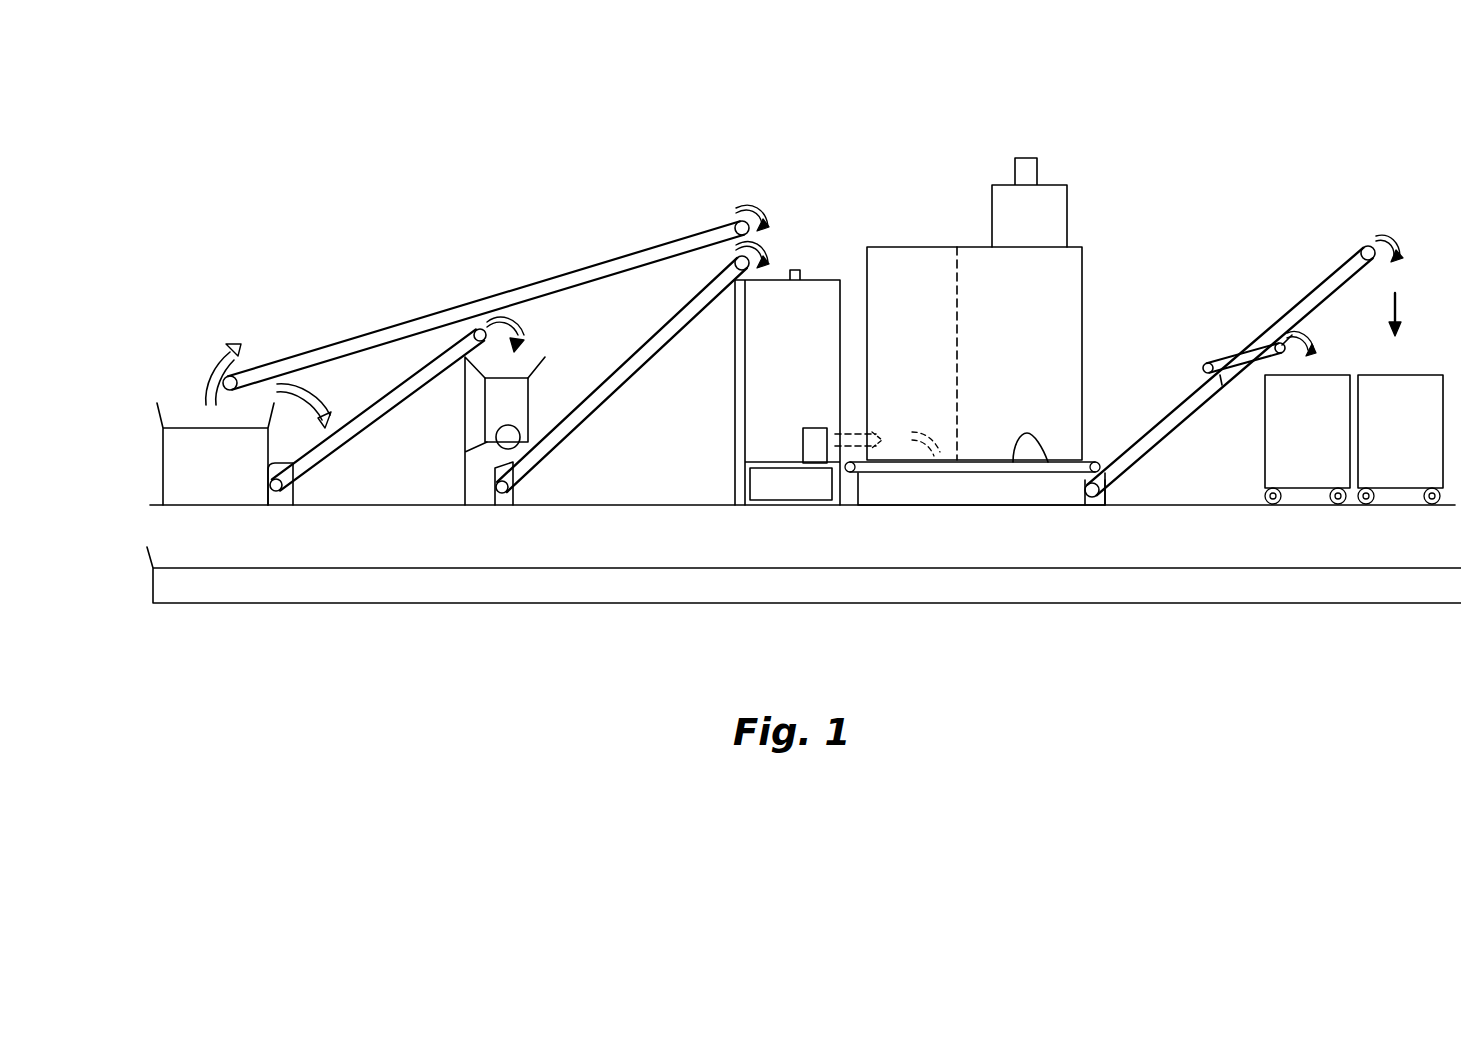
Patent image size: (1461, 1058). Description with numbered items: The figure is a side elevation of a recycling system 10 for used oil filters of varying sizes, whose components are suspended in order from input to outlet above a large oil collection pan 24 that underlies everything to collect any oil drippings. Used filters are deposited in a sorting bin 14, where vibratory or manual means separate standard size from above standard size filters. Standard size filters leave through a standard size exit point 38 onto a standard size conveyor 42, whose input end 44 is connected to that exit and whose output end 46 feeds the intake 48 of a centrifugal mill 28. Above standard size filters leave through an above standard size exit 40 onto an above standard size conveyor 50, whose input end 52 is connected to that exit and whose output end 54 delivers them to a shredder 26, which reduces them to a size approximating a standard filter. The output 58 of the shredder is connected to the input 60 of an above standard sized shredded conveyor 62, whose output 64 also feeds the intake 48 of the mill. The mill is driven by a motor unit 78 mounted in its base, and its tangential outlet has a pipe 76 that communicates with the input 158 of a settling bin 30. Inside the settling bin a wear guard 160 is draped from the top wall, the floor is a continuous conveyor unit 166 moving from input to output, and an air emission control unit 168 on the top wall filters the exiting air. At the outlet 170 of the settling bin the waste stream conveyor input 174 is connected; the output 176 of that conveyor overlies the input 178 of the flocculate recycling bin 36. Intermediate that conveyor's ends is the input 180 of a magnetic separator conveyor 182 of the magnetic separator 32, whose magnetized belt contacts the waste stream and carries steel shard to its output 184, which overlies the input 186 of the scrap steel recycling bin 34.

The recycling system 10 is at (551, 684).
The sorting bin 14 is at (206, 470).
The oil collection pan 24 is at (822, 592).
The shredder 26 is at (495, 414).
The centrifugal mill 28 is at (783, 365).
The settling bin 30 is at (989, 355).
The magnetic separator 32 is at (1289, 305).
The scrap steel recycling bin 34 is at (1391, 450).
The flocculate recycling bin 36 is at (1293, 450).
The standard size exit point 38 is at (208, 378).
The above standard size exit 40 is at (287, 383).
The standard size conveyor 42 is at (486, 304).
The input end 44 is at (238, 372).
The output end 46 is at (753, 210).
The intake 48 is at (762, 275).
The above standard size conveyor 50 is at (386, 455).
The input end 52 is at (296, 460).
The output end 54 is at (525, 319).
The output of the shredder 58 is at (500, 438).
The input of the shredded conveyor 60 is at (512, 466).
The above standard sized shredded conveyor 62 is at (657, 425).
The output of the shredded conveyor 64 is at (737, 252).
The pipe 76 is at (850, 447).
The motor unit 78 is at (805, 443).
The input of the settling bin 158 is at (860, 442).
The wear guard 160 is at (953, 273).
The continuous conveyor unit 166 is at (1013, 463).
The air emission control unit 168 is at (1047, 207).
The outlet of the settling bin 170 is at (1100, 462).
The waste stream conveyor input 174 is at (1100, 478).
The output of the waste stream conveyor 176 is at (1298, 340).
The input of the flocculate recycling bin 178 is at (1312, 374).
The input of the magnetic separator conveyor 180 is at (1204, 365).
The magnetic separator conveyor 182 is at (1262, 327).
The output of the magnetic separator conveyor 184 is at (1372, 248).
The input of the scrap steel recycling bin 186 is at (1393, 374).